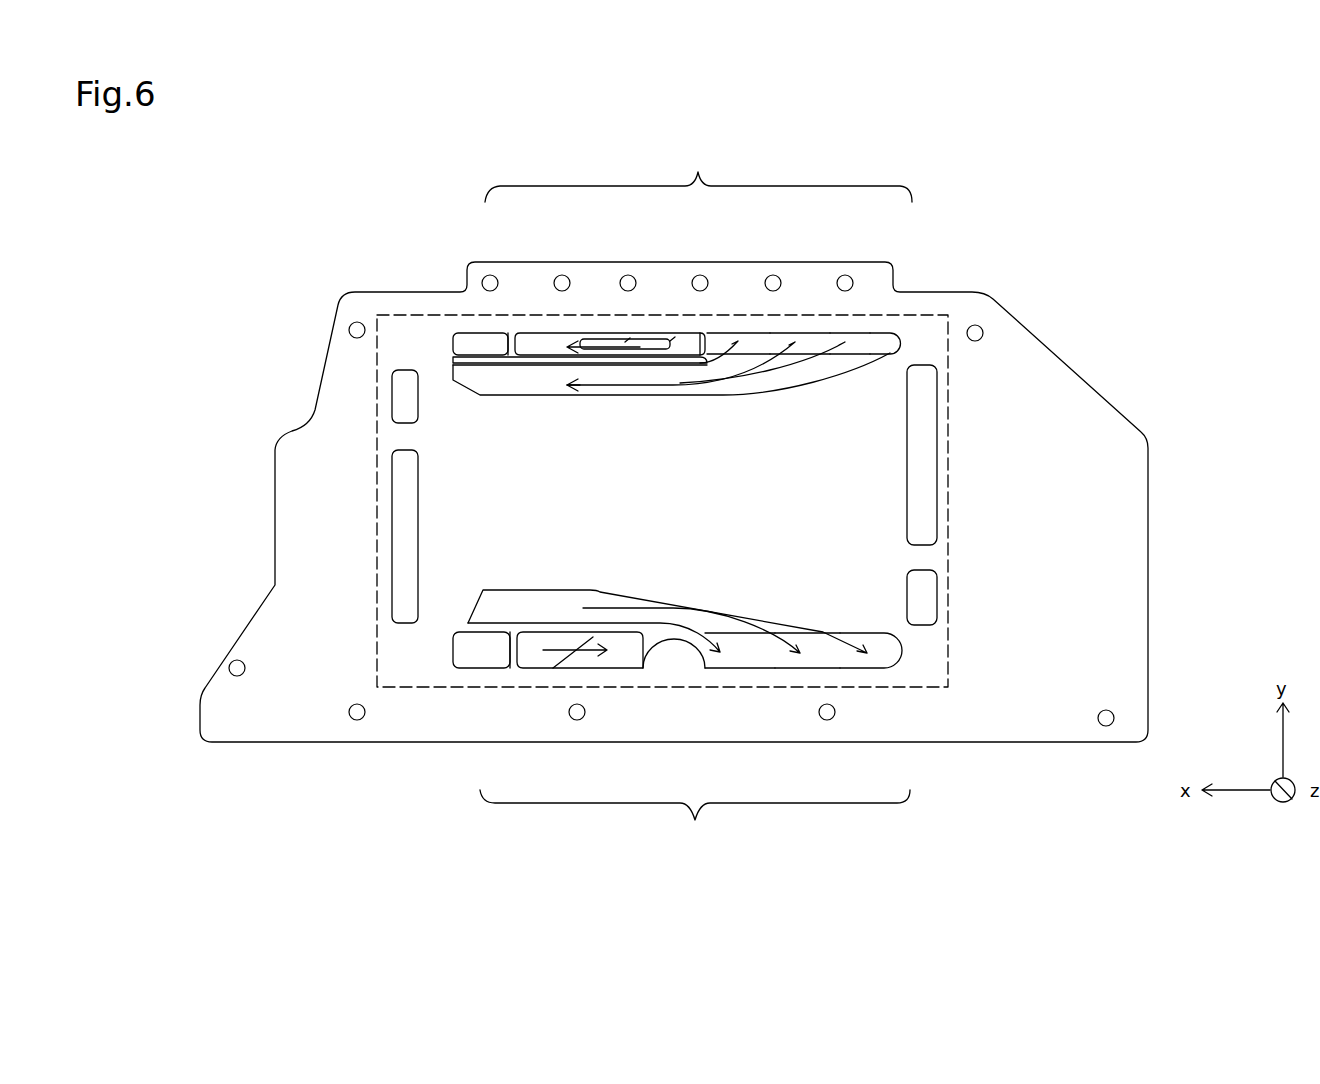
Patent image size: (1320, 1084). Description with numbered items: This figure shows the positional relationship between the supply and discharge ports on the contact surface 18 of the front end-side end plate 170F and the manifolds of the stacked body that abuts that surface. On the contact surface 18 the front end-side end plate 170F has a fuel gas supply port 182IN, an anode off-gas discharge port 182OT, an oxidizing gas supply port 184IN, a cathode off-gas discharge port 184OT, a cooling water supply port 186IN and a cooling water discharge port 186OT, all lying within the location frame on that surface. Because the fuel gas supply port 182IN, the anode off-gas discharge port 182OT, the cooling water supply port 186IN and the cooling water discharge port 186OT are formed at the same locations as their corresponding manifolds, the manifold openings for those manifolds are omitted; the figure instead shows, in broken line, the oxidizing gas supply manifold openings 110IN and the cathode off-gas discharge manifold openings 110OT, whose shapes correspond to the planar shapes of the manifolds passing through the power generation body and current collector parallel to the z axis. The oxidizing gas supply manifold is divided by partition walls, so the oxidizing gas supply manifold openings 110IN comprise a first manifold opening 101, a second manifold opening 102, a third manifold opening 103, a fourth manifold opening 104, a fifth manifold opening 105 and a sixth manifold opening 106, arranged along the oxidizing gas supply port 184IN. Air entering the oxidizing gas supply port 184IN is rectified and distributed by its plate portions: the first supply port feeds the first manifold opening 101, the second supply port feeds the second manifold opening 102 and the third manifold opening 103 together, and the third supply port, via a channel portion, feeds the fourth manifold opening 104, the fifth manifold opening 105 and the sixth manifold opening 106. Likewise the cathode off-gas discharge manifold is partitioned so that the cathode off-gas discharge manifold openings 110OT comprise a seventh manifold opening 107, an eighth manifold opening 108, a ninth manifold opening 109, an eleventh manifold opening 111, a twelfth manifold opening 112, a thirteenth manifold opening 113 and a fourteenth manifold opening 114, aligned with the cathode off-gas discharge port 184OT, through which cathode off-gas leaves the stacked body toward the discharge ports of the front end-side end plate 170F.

The contact surface 18 is at (416, 293).
The front end-side end plate 170F is at (262, 212).
The fuel gas supply port 182IN is at (398, 385).
The anode off-gas discharge port 182OT is at (925, 600).
The oxidizing gas supply port 184IN is at (600, 595).
The cathode off-gas discharge port 184OT is at (595, 396).
The cooling water supply port 186IN is at (395, 586).
The cooling water discharge port 186OT is at (921, 402).
The oxidizing gas supply manifold openings 110IN is at (695, 824).
The cathode off-gas discharge manifold openings 110OT is at (698, 173).
The first manifold opening 101 is at (497, 670).
The second manifold opening 102 is at (540, 670).
The third manifold opening 103 is at (600, 670).
The fourth manifold opening 104 is at (745, 670).
The fifth manifold opening 105 is at (808, 670).
The sixth manifold opening 106 is at (875, 670).
The seventh manifold opening 107 is at (505, 340).
The eighth manifold opening 108 is at (533, 345).
The ninth manifold opening 109 is at (593, 345).
The eleventh manifold opening 111 is at (680, 345).
The twelfth manifold opening 112 is at (753, 345).
The thirteenth manifold opening 113 is at (807, 345).
The fourteenth manifold opening 114 is at (868, 345).